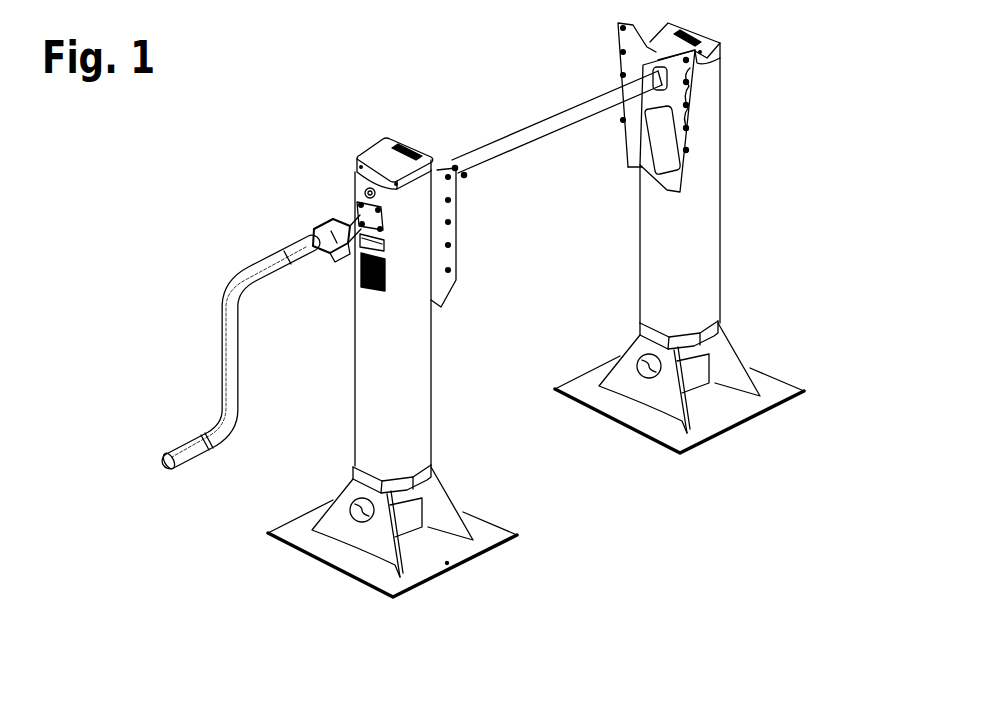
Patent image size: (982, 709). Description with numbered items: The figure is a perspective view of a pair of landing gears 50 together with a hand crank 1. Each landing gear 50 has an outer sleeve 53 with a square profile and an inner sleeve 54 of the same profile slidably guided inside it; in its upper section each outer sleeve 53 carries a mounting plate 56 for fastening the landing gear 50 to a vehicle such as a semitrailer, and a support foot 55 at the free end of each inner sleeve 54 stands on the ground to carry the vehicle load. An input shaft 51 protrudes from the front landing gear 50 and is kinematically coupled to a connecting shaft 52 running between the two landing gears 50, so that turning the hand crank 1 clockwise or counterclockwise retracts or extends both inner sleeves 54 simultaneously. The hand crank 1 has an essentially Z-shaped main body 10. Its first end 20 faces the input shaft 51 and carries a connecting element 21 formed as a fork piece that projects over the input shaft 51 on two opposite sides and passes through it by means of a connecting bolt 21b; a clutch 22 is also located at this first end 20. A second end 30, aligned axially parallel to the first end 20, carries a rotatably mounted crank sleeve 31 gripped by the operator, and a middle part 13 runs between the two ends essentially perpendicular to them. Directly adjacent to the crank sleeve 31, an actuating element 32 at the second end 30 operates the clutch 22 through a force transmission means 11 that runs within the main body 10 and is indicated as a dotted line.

The hand crank 1 is at (217, 238).
The main body 10 is at (223, 355).
The force transmission means 11 is at (223, 295).
The middle part 13 is at (240, 370).
The first end 20 is at (219, 304).
The connecting element 21 is at (328, 252).
The connecting bolt 21b is at (348, 248).
The clutch 22 is at (310, 240).
The second end 30 is at (128, 463).
The crank sleeve 31 is at (187, 450).
The actuating element 32 is at (165, 462).
The landing gear 50 is at (577, 334).
The input shaft 51 is at (348, 222).
The connecting shaft 52 is at (508, 138).
The outer sleeve 53 is at (432, 395).
The inner sleeve 54 is at (352, 478).
The support foot 55 is at (323, 565).
The mounting plate 56 is at (453, 273).